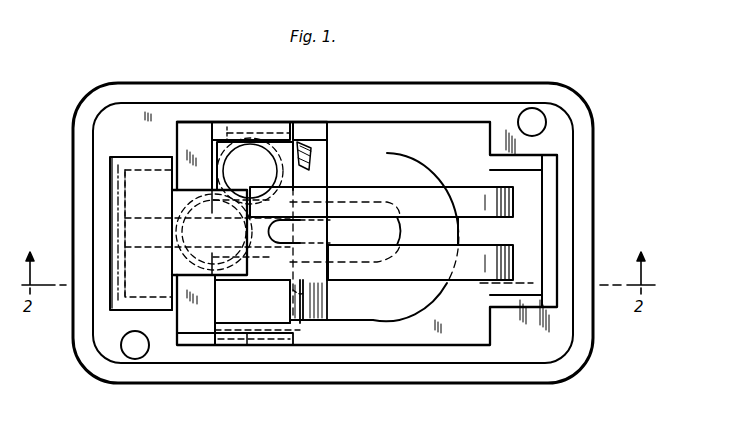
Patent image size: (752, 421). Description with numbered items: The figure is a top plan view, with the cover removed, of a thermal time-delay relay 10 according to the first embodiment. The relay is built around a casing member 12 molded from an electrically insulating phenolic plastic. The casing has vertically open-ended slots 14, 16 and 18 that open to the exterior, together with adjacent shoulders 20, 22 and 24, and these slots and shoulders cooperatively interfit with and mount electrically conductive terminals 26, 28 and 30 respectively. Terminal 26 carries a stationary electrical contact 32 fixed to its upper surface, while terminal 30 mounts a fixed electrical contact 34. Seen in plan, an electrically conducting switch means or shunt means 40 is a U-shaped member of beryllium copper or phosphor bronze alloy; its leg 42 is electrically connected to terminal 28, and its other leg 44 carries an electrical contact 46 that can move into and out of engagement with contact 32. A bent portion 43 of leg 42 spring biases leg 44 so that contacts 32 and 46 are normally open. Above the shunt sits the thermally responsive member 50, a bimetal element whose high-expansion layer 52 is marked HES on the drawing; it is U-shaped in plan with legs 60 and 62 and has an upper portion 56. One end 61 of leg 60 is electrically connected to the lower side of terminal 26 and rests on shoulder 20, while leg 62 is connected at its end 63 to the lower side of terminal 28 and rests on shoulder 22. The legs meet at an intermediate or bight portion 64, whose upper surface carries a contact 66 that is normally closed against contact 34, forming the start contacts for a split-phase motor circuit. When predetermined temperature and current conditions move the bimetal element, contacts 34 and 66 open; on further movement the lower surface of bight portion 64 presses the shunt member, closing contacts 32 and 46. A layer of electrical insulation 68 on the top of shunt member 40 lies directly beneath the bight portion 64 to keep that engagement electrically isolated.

The thermal time-delay relay 10 is at (602, 63).
The casing member 12 is at (587, 165).
The slot 14 is at (258, 142).
The slot 16 is at (247, 337).
The slot 18 is at (115, 202).
The shoulder 20 is at (187, 150).
The shoulder 22 is at (184, 319).
The shoulder 24 is at (143, 167).
The terminal 26 is at (287, 123).
The terminal 28 is at (225, 337).
The terminal 30 is at (118, 192).
The stationary electrical contact 32 is at (260, 140).
The fixed electrical contact 34 is at (177, 208).
The switch means or shunt means 40 is at (434, 312).
The leg 42 is at (375, 313).
The bent portion 43 is at (303, 293).
The leg 44 is at (388, 153).
The electrical contact 46 is at (227, 122).
The thermally responsive member 50 is at (462, 183).
The layer 52 is at (413, 190).
The upper portion 56 is at (478, 217).
The leg 60 is at (391, 217).
The end 61 is at (300, 231).
The leg 62 is at (430, 253).
The end 63 is at (272, 253).
The intermediate or bight portion 64 is at (265, 270).
The contact 66 is at (187, 262).
The layer of electrical insulation 68 is at (307, 195).